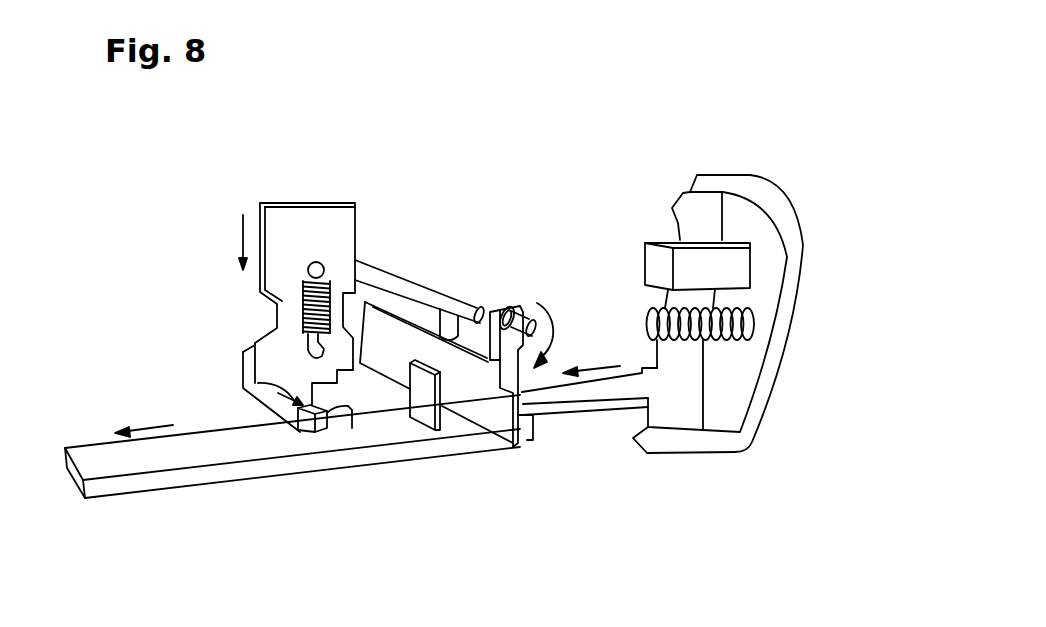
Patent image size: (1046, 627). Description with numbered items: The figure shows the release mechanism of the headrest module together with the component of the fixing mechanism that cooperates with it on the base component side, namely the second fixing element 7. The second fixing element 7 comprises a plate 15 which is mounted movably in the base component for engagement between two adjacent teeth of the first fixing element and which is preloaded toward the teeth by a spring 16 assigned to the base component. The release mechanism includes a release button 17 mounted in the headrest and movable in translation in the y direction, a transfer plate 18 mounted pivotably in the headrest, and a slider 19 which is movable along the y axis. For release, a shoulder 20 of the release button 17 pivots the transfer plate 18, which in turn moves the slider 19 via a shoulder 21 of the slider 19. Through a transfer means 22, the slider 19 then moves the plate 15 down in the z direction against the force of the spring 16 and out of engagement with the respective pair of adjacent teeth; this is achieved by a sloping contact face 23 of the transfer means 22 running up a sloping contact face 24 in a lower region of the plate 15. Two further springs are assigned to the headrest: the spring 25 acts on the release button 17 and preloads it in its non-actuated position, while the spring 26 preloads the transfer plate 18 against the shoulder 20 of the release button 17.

The second fixing element 7 is at (272, 193).
The plate 15 is at (317, 226).
The spring 16 is at (299, 317).
The release button 17 is at (767, 260).
The transfer plate 18 is at (520, 437).
The slider 19 is at (145, 482).
The shoulder of the release button 20 is at (615, 408).
The shoulder of the slider 21 is at (418, 413).
The transfer means 22 is at (350, 414).
The sloping contact face of the transfer means 23 is at (300, 432).
The sloping contact face of the plate 24 is at (293, 402).
The spring 25 is at (757, 323).
The spring 26 is at (496, 308).